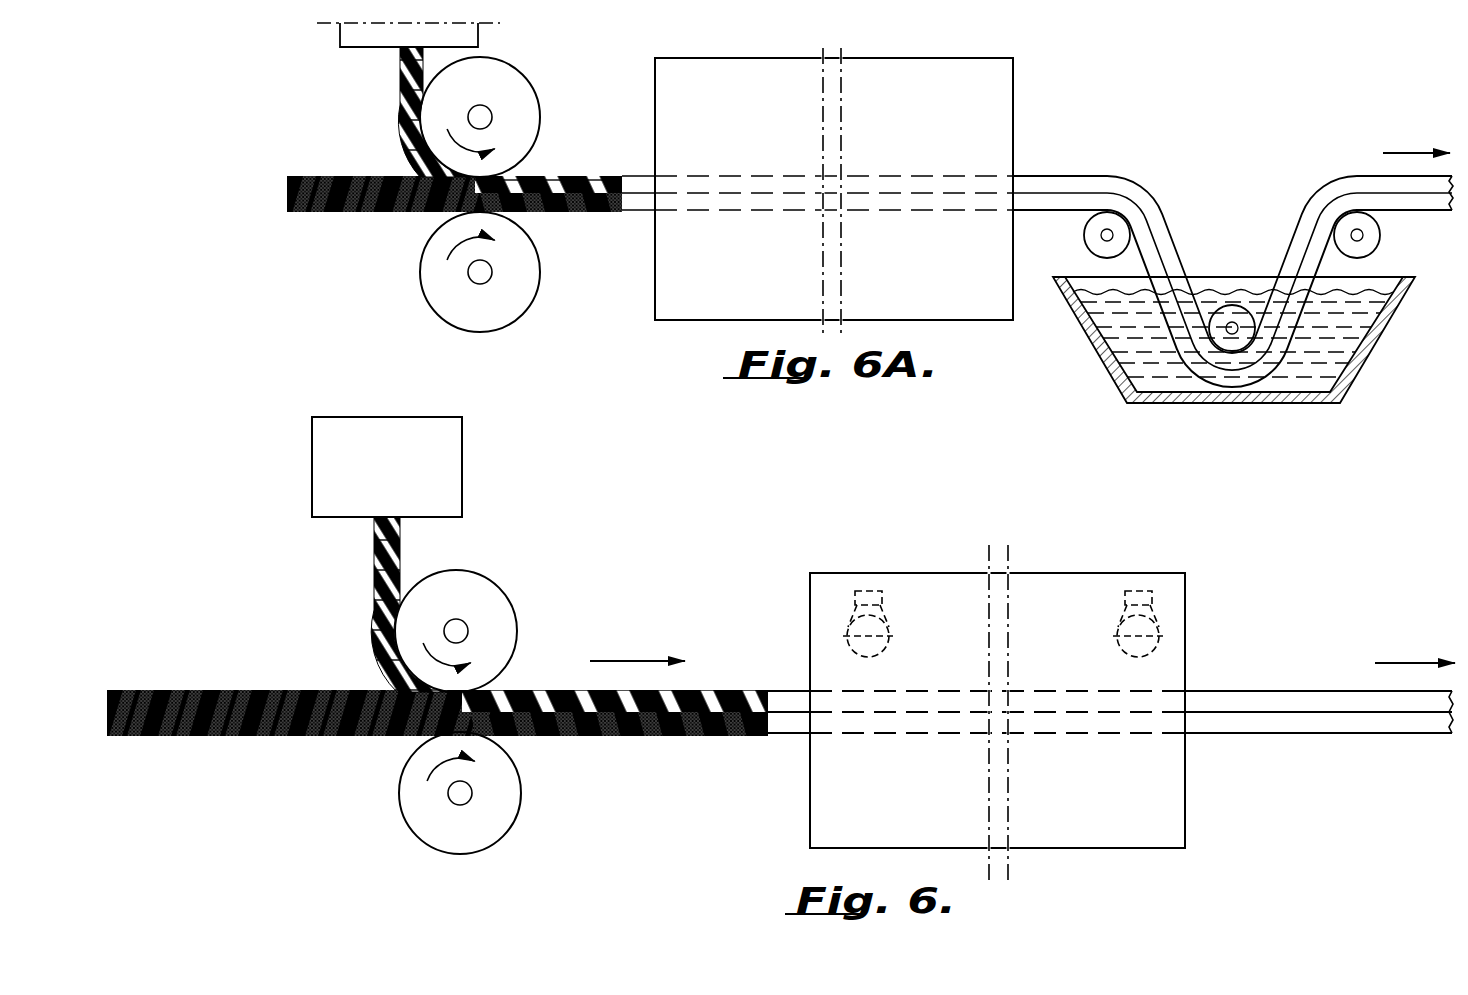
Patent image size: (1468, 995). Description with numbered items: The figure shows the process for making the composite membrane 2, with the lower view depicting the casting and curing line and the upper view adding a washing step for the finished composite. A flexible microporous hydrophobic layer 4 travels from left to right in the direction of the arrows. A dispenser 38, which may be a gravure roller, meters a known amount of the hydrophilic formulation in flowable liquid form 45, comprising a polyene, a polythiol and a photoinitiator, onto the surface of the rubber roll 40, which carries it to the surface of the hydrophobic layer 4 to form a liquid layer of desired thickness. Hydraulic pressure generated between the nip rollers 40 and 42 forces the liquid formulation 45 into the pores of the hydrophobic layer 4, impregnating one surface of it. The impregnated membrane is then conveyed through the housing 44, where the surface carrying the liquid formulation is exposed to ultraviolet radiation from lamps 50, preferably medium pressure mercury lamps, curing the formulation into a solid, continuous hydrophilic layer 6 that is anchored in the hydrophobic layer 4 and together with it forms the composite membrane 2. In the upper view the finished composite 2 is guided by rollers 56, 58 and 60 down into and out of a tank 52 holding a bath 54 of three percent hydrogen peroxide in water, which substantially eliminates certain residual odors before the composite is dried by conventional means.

In FIG. 6, the composite membrane 2 is at (1363, 737).
In FIG. 6A, the flexible microporous hydrophobic layer 4 is at (369, 213).
In FIG. 6, the flexible microporous hydrophobic layer 4 is at (294, 738).
In FIG. 6, the solid hydrophilic layer 6 is at (1283, 707).
In FIG. 6A, the dispenser 38 is at (342, 43).
In FIG. 6, the dispenser 38 is at (337, 440).
In FIG. 6A, the rubber roll 40 is at (523, 125).
In FIG. 6, the rubber roll 40 is at (482, 603).
In FIG. 6A, the nip roller 42 is at (523, 275).
In FIG. 6, the nip roller 42 is at (425, 820).
In FIG. 6A, the housing 44 is at (782, 73).
In FIG. 6, the housing 44 is at (917, 593).
In FIG. 6A, the liquid formulation 45 is at (404, 90).
In FIG. 6, the liquid formulation 45 is at (375, 575).
In FIG. 6, the lamps 50 is at (857, 620).
In FIG. 6A, the tank 52 is at (1118, 371).
In FIG. 6A, the bath 54 is at (1343, 354).
In FIG. 6A, the entry guide roller 56 is at (1086, 242).
In FIG. 6A, the exit guide roller 58 is at (1382, 236).
In FIG. 6A, the immersion roller 60 is at (1233, 340).